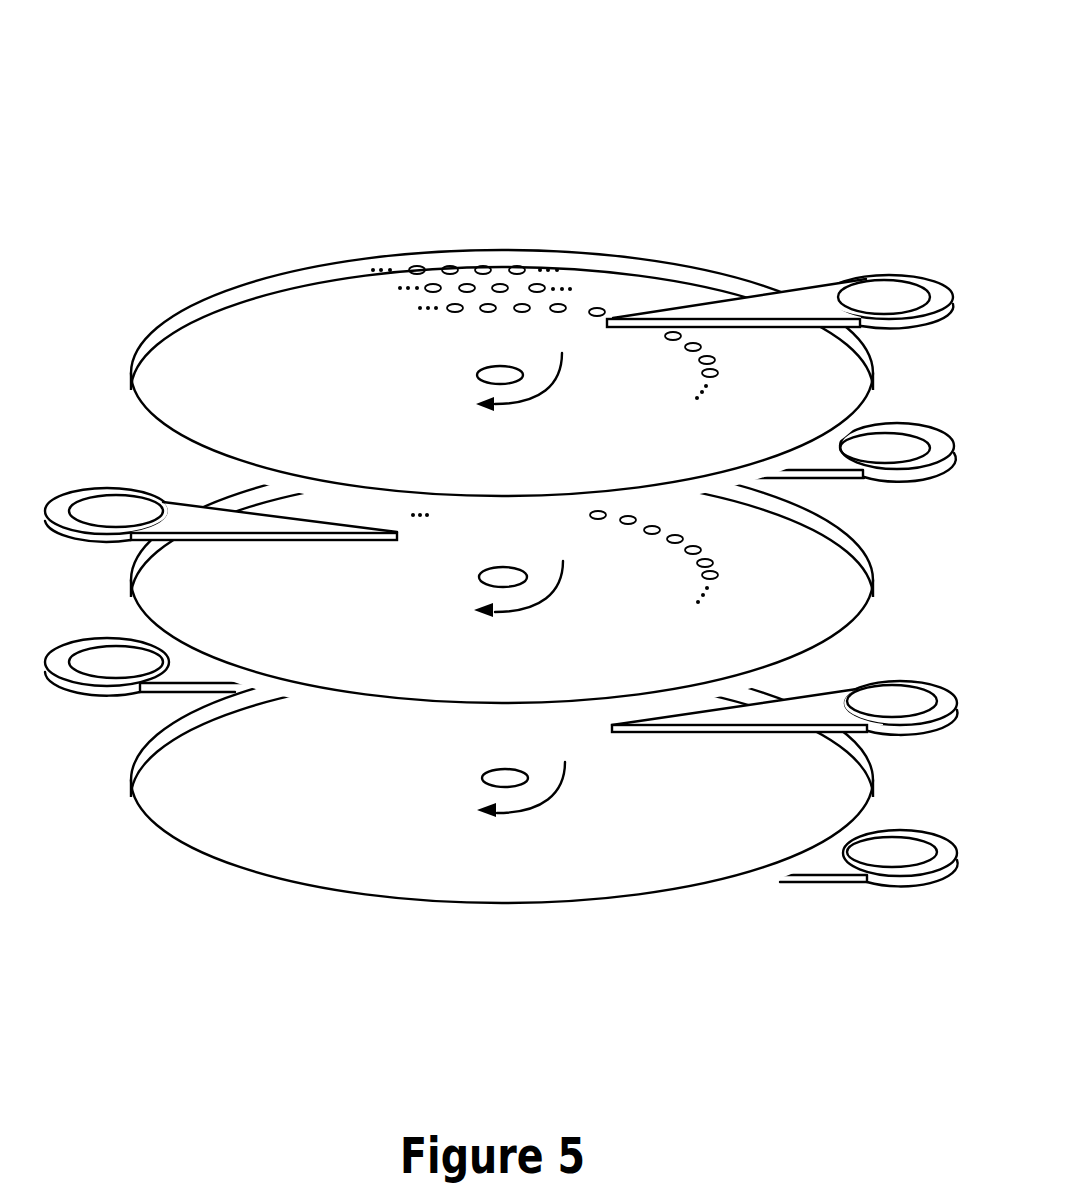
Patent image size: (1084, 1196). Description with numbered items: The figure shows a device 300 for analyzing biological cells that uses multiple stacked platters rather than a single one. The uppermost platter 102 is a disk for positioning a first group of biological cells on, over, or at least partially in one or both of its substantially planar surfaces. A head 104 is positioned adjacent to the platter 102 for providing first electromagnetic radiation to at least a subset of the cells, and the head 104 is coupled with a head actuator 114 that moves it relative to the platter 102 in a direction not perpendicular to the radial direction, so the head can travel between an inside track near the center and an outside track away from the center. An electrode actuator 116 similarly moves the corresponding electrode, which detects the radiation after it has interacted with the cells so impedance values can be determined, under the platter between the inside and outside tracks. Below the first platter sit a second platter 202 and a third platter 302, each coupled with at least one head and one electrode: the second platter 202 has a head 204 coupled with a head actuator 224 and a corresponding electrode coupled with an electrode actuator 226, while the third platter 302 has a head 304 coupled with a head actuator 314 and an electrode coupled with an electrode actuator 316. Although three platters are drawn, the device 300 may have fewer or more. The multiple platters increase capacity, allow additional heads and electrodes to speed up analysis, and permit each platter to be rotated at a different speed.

The device 300 is at (345, 126).
The platter 102 is at (320, 291).
The head 104 is at (615, 317).
The head actuator 114 is at (889, 275).
The electrode actuator 116 is at (907, 482).
The second platter 202 is at (515, 672).
The head 204 is at (398, 538).
The head actuator 224 is at (58, 505).
The electrode actuator 226 is at (95, 695).
The third platter 302 is at (327, 866).
The head 304 is at (612, 735).
The head actuator 314 is at (894, 683).
The electrode actuator 316 is at (909, 885).